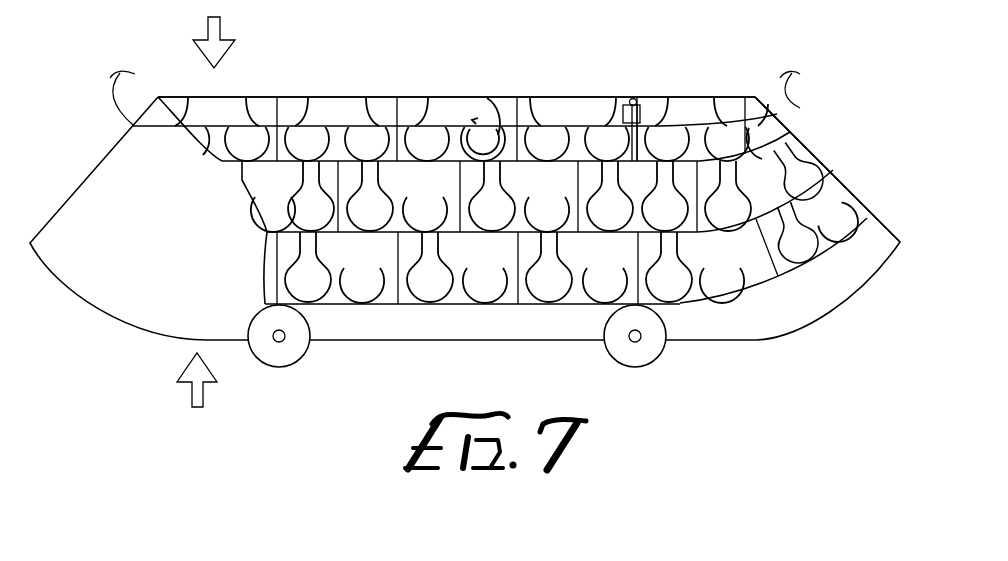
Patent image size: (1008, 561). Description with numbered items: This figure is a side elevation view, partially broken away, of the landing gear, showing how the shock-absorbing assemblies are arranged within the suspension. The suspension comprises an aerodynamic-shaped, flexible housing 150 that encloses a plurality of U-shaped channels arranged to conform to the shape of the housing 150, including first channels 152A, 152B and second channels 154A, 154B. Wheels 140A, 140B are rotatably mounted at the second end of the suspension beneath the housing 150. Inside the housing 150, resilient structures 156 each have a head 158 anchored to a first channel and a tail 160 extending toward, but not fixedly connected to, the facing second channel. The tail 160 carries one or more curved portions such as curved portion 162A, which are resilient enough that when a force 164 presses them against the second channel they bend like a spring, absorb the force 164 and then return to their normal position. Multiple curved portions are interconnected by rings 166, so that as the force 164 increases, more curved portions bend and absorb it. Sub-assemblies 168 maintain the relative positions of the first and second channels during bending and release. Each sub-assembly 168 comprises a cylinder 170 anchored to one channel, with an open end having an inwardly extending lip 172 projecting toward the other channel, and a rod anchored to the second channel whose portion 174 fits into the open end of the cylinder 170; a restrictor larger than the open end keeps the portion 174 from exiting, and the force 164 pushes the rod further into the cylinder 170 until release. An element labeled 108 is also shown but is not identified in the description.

The tread segment 108 is at (255, 123).
The wheel 140A is at (662, 352).
The wheel 140B is at (297, 358).
The flexible housing 150 is at (102, 282).
The first channel 152A is at (533, 97).
The first channel 152B is at (770, 152).
The second channel 154A is at (748, 150).
The second channel 154B is at (830, 168).
The resilient structure 156 is at (380, 102).
The head 158 is at (377, 103).
The tail 160 is at (470, 128).
The curved portion 162A is at (463, 148).
The force 164 is at (224, 214).
The ring 166 is at (475, 117).
The sub-assembly 168 is at (646, 99).
The cylinder 170 is at (613, 99).
The inwardly extending lip 172 is at (650, 127).
The portion of the rod 174 is at (636, 98).